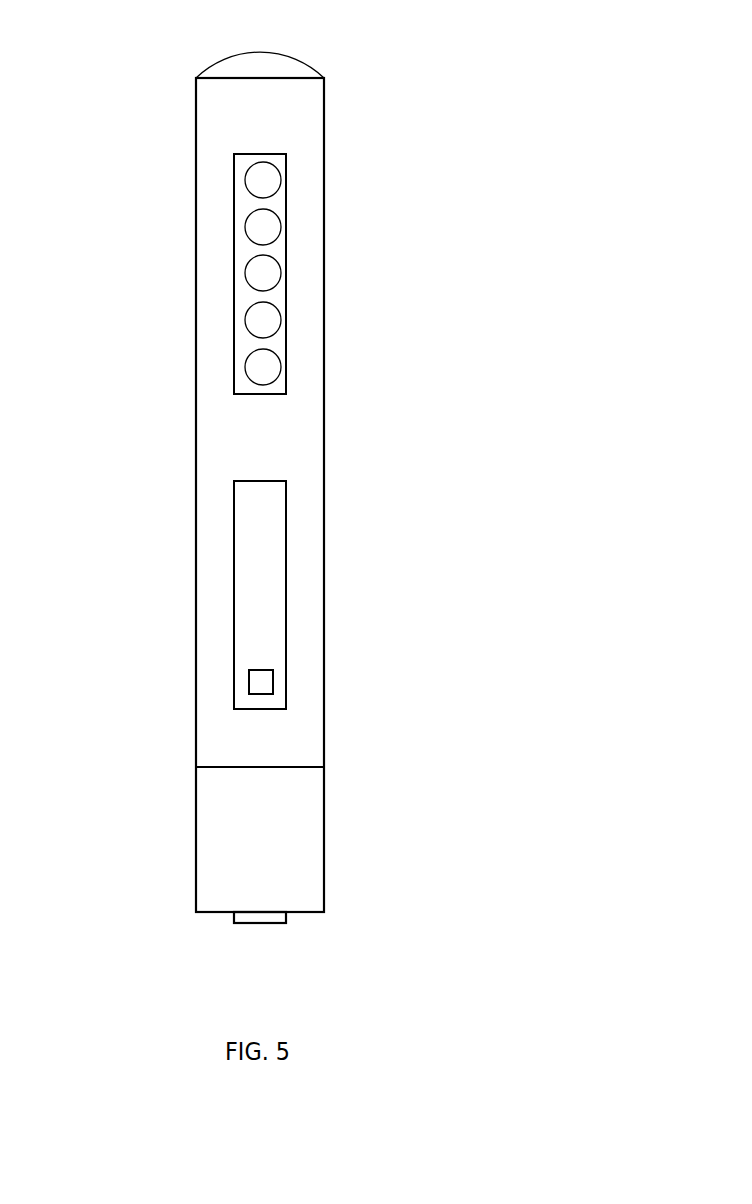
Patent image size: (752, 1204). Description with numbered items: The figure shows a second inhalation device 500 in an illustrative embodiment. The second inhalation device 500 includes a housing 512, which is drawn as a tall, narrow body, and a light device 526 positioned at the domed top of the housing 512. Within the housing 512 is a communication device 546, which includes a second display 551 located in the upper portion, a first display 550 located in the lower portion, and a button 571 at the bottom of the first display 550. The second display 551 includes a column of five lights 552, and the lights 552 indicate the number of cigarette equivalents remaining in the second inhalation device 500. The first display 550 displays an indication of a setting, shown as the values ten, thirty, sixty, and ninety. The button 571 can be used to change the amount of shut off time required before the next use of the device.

The second inhalation device 500 is at (244, 466).
The housing 512 is at (325, 110).
The light device 526 is at (300, 63).
The communication device 546 is at (292, 263).
The first display 550 is at (283, 546).
The second display 551 is at (287, 190).
The lights 552 is at (244, 360).
The button 571 is at (328, 700).